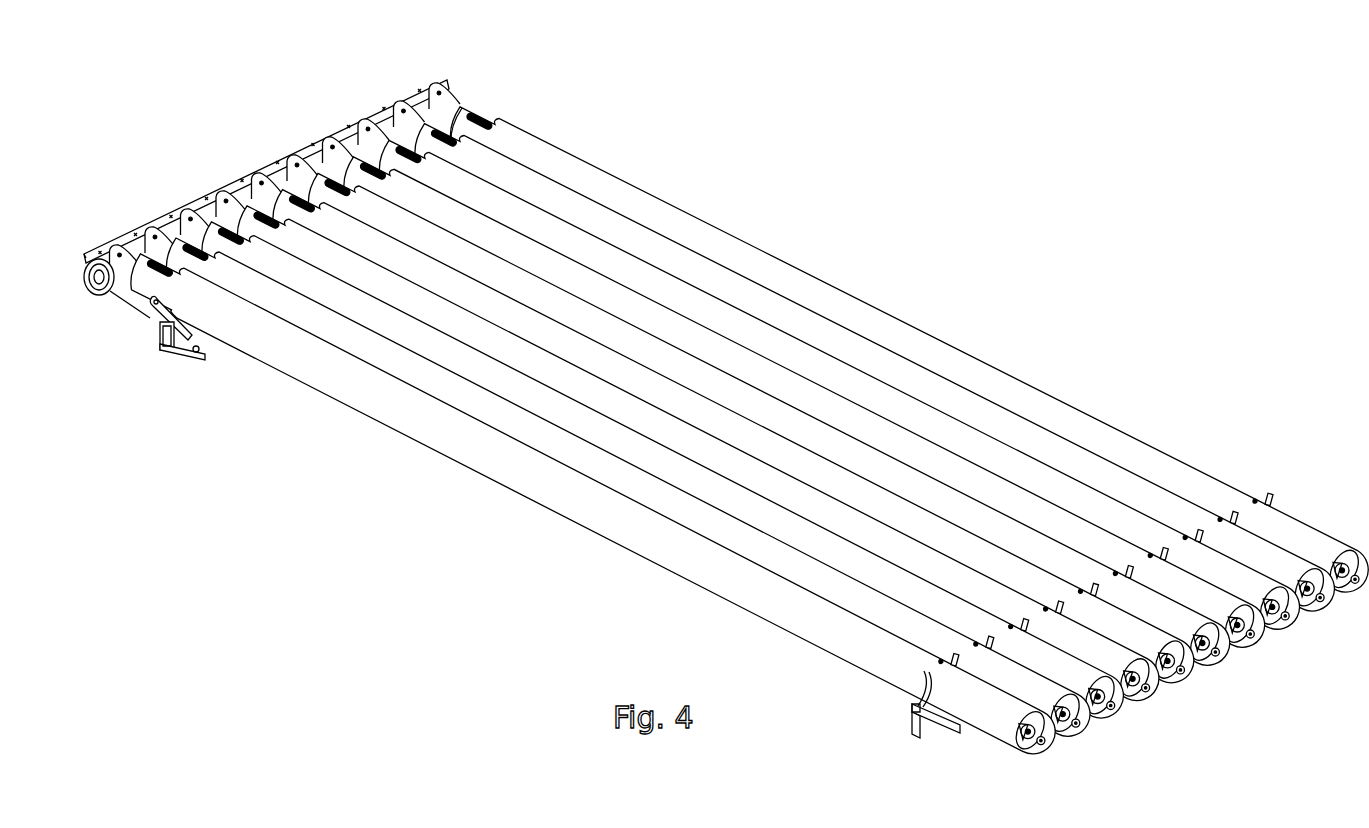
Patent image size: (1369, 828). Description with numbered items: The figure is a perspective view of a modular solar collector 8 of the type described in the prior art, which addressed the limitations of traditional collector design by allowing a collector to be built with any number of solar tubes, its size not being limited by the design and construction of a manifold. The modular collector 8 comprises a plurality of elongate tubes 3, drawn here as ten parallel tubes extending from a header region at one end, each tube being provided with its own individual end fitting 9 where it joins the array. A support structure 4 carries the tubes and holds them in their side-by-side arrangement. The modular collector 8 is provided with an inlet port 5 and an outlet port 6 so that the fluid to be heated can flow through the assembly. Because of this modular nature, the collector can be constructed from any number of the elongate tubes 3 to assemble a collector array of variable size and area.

The elongate tube 3 is at (536, 484).
The support structure 4 is at (190, 357).
The inlet port 5 is at (86, 294).
The outlet port 6 is at (458, 92).
The modular collector 8 is at (872, 205).
The end fitting 9 is at (438, 82).